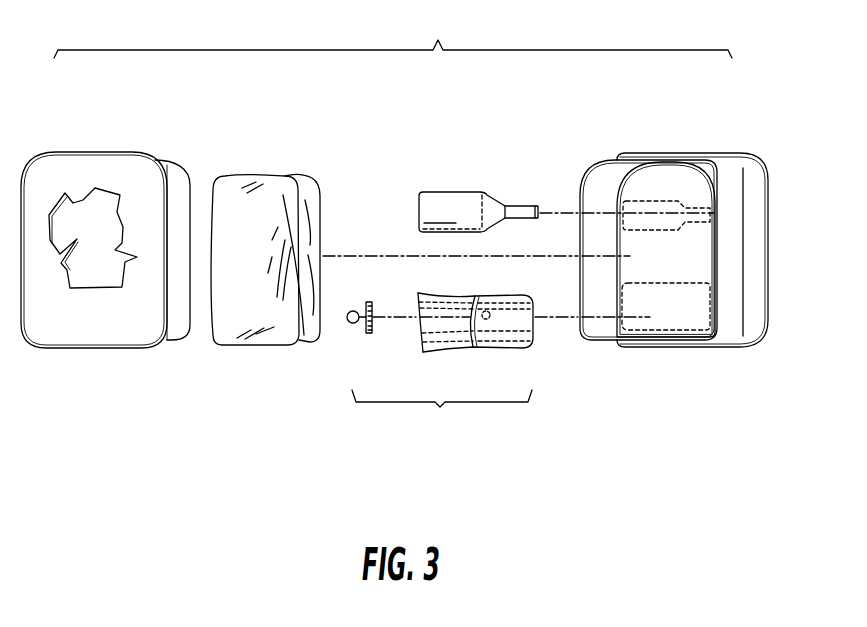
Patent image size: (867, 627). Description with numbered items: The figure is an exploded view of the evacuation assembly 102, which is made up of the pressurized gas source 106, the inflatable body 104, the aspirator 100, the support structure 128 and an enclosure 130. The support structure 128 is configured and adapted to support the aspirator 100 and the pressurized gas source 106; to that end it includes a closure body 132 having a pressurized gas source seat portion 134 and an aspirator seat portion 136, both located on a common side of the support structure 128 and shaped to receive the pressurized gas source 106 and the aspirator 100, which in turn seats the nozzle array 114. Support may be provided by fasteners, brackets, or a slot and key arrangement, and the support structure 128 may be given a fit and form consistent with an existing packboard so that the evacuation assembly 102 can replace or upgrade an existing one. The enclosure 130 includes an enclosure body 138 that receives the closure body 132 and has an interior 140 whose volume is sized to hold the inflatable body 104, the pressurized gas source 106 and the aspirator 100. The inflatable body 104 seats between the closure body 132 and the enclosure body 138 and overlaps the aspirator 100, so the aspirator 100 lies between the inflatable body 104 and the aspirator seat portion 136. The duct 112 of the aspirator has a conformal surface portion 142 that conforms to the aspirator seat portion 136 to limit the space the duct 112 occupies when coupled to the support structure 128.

The aspirator 100 is at (442, 415).
The evacuation assembly 102 is at (393, 33).
The inflatable body 104 is at (269, 170).
The pressurized gas source 106 is at (459, 178).
The duct 112 is at (500, 345).
The nozzle array 114 is at (352, 339).
The support structure 128 is at (661, 140).
The enclosure 130 is at (94, 146).
The closure body 132 is at (705, 252).
The pressurized gas source seat portion 134 is at (668, 209).
The aspirator seat portion 136 is at (663, 323).
The enclosure body 138 is at (96, 335).
The interior 140 is at (112, 247).
The conformal surface portion 142 is at (488, 322).